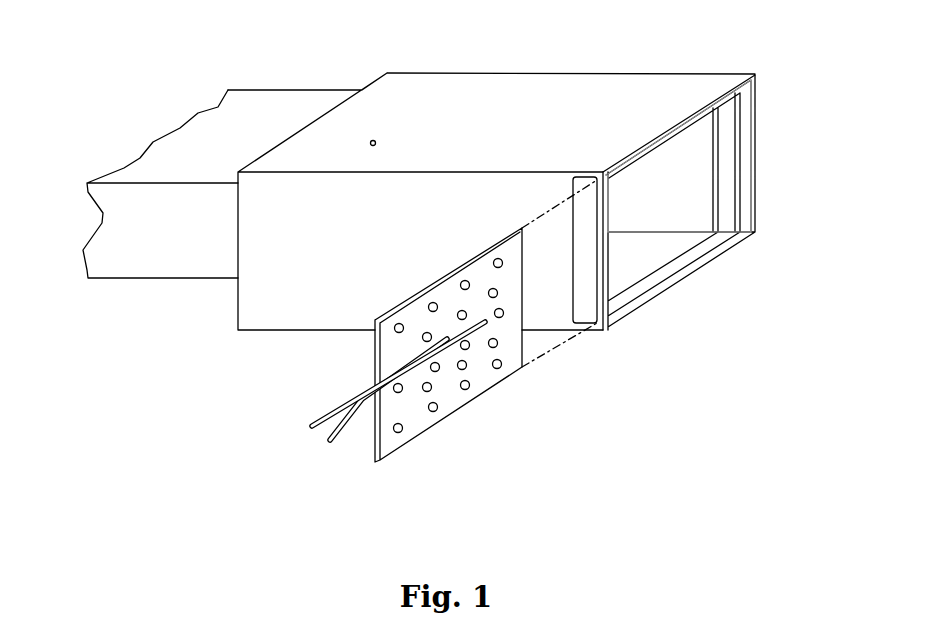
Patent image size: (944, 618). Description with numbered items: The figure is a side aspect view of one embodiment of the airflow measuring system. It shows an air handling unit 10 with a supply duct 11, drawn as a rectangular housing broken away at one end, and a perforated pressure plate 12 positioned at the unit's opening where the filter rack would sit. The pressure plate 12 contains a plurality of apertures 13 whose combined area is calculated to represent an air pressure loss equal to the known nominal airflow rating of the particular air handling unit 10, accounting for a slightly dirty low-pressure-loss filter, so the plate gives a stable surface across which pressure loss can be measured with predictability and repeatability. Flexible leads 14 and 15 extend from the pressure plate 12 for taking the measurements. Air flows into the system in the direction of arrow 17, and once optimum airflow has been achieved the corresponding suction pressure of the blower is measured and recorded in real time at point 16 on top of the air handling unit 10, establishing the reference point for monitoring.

The air handling unit 10 is at (566, 71).
The supply duct 11 is at (240, 94).
The perforated pressure plate 12 is at (368, 341).
The apertures 13 is at (507, 365).
The flexible lead 14 is at (303, 431).
The flexible lead 15 is at (329, 449).
The point 16 is at (381, 142).
The arrow 17 is at (704, 179).